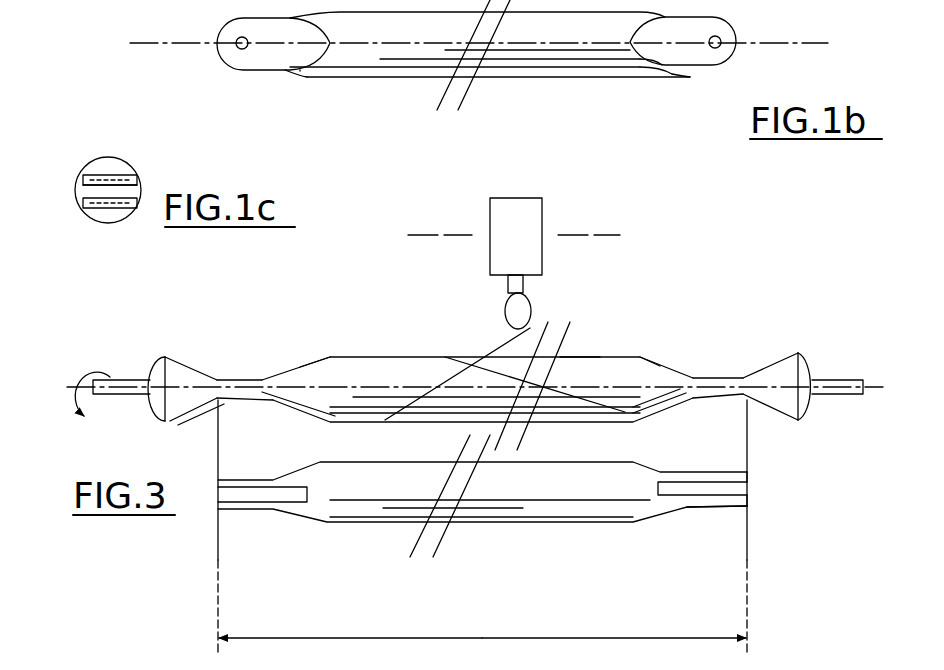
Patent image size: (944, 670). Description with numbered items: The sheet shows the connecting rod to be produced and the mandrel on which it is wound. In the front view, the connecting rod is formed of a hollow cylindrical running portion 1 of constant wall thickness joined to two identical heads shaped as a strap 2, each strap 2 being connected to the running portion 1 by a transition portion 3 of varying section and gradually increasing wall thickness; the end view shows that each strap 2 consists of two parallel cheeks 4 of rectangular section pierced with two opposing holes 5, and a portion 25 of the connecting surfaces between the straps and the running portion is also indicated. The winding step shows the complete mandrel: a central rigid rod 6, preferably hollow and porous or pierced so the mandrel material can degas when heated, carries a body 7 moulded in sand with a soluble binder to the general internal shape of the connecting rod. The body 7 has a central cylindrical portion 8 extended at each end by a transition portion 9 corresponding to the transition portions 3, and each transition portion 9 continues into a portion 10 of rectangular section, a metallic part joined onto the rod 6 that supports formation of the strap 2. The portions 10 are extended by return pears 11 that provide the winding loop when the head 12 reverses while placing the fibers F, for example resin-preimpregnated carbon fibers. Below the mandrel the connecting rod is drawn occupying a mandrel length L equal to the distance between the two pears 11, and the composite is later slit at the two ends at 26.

In FIG. 1B, the running portion 1 is at (505, 57).
In FIG. 1C, the running portion 1 is at (138, 184).
In FIG. 3, the running portion 1 is at (523, 509).
In FIG. 1B, the strap 2 is at (213, 23).
In FIG. 3, the strap 2 is at (718, 512).
In FIG. 1B, the transition portion 3 is at (308, 78).
In FIG. 1C, the cheeks 4 is at (82, 200).
In FIG. 3, the cheeks 4 is at (748, 502).
In FIG. 1B, the holes 5 is at (237, 46).
In FIG. 1C, the holes 5 is at (107, 200).
In FIG. 3, the central rigid rod 6 is at (132, 386).
In FIG. 3, the body 7 is at (589, 347).
In FIG. 3, the central cylindrical portion 8 is at (416, 378).
In FIG. 3, the transition portion 9 is at (313, 364).
In FIG. 3, the portion with rectangular section 10 is at (264, 380).
In FIG. 3, the return pear 11 is at (186, 352).
In FIG. 3, the head 12 is at (524, 232).
In FIG. 1B, the connecting surface portion 25 is at (307, 50).
In FIG. 3, the connecting surface portion 25 is at (318, 465).
In FIG. 3, the slit 26 is at (225, 377).
In FIG. 3, the fibers F is at (500, 342).
In FIG. 3, the mandrel length L is at (482, 526).